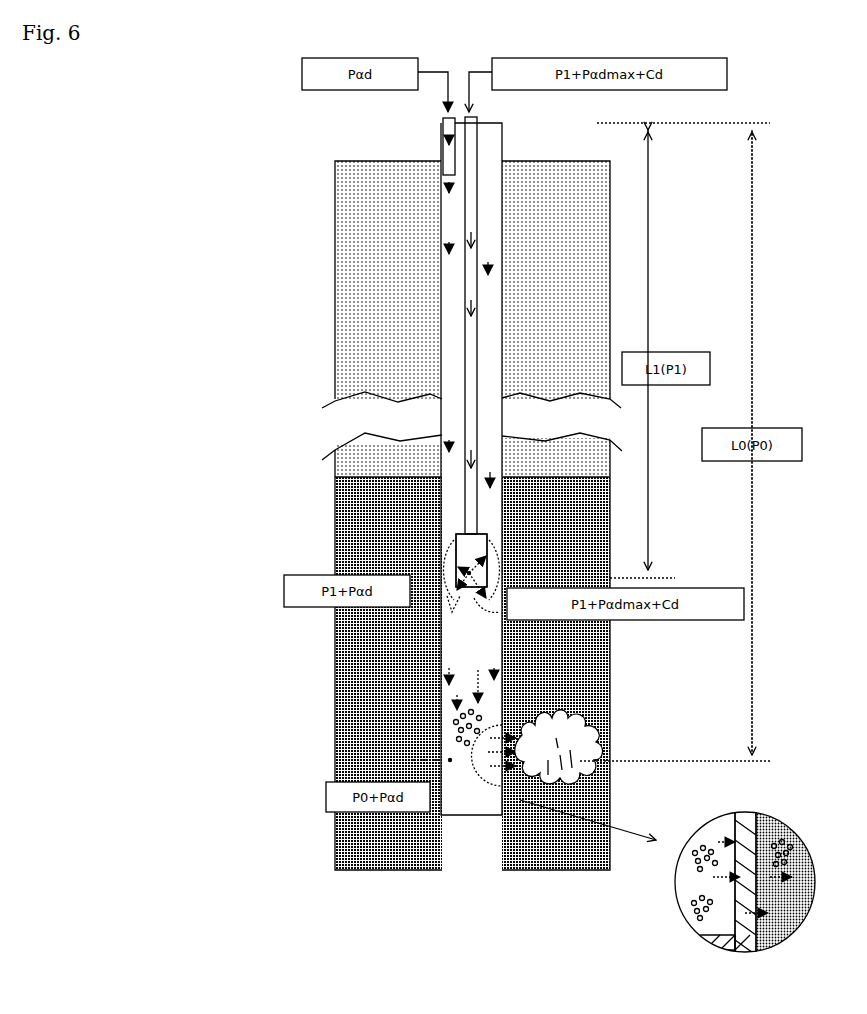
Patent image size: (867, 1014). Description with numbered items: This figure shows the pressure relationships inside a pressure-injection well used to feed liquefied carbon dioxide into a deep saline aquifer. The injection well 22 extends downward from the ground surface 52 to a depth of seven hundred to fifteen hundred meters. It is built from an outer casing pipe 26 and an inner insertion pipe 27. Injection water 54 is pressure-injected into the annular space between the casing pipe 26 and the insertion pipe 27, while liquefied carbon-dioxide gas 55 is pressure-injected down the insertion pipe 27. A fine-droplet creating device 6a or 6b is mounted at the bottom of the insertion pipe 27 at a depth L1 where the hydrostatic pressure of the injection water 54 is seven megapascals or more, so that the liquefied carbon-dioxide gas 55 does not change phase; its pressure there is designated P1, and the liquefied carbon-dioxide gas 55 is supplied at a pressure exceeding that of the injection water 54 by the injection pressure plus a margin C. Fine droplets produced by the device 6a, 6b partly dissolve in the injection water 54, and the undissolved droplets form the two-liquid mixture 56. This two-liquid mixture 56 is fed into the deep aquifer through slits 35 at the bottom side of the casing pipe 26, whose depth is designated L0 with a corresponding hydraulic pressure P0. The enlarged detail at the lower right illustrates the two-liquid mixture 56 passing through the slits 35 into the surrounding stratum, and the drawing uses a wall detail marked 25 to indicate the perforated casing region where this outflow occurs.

The ground surface 52 is at (356, 161).
The injection well 22 is at (508, 152).
The casing pipe 26 is at (442, 150).
The insertion pipe 27 is at (480, 226).
The injection water 54 is at (440, 238).
The liquefied carbon-dioxide gas 55 is at (485, 325).
The fine-droplet creating device 6a is at (490, 548).
The fine-droplet device 6b is at (510, 559).
The two-liquid mixture 56 is at (733, 841).
The slits 35 is at (736, 906).
The perforated pipe wall 25 is at (742, 952).